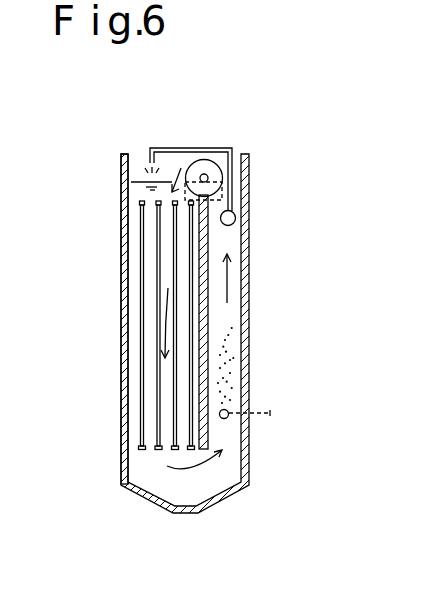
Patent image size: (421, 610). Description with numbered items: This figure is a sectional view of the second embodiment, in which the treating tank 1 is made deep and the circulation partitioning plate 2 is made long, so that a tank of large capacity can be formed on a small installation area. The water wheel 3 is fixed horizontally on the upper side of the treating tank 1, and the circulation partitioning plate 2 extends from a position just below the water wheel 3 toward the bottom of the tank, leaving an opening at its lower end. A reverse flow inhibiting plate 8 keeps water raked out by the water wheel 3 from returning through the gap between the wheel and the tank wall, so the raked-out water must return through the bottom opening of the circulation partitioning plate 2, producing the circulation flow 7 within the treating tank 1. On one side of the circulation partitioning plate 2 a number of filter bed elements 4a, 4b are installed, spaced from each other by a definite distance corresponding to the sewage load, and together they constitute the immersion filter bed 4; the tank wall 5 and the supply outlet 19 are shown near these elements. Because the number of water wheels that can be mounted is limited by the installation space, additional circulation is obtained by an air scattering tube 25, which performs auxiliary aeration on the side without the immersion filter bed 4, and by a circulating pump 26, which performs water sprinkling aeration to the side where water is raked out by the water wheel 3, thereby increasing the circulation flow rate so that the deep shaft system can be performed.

The treating tank 1 is at (248, 366).
The circulation partitioning plate 2 is at (208, 312).
The water wheel 3 is at (207, 158).
The immersion filter bed 4 is at (116, 325).
The filter bed element 4a is at (172, 247).
The filter bed element 4b is at (155, 428).
The tank wall 5 is at (140, 382).
The circulation flow 7 is at (203, 465).
The reverse flow inhibiting plate 8 is at (215, 189).
The liquid supply pipe outlet 19 is at (181, 166).
The air scattering tube 25 is at (225, 419).
The circulating pump 26 is at (234, 226).